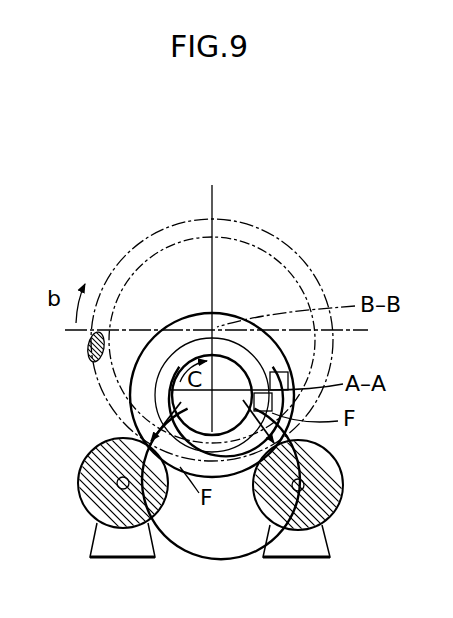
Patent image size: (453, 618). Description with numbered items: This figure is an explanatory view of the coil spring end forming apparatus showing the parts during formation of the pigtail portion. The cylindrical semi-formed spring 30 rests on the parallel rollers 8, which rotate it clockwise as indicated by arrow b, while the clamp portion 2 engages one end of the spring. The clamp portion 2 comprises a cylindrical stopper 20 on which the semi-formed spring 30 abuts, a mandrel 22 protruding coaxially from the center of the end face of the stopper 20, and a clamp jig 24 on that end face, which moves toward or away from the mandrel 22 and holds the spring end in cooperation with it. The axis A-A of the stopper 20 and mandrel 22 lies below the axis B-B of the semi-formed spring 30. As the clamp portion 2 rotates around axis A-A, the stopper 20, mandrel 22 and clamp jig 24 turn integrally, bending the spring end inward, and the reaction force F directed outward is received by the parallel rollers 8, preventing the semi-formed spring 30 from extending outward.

The clamp portion 2 is at (174, 316).
The parallel rollers 8 is at (78, 472).
The cylindrical stopper 20 is at (147, 353).
The mandrel 22 is at (155, 397).
The clamp jig 24 is at (290, 373).
The semi-formed spring 30 is at (253, 285).